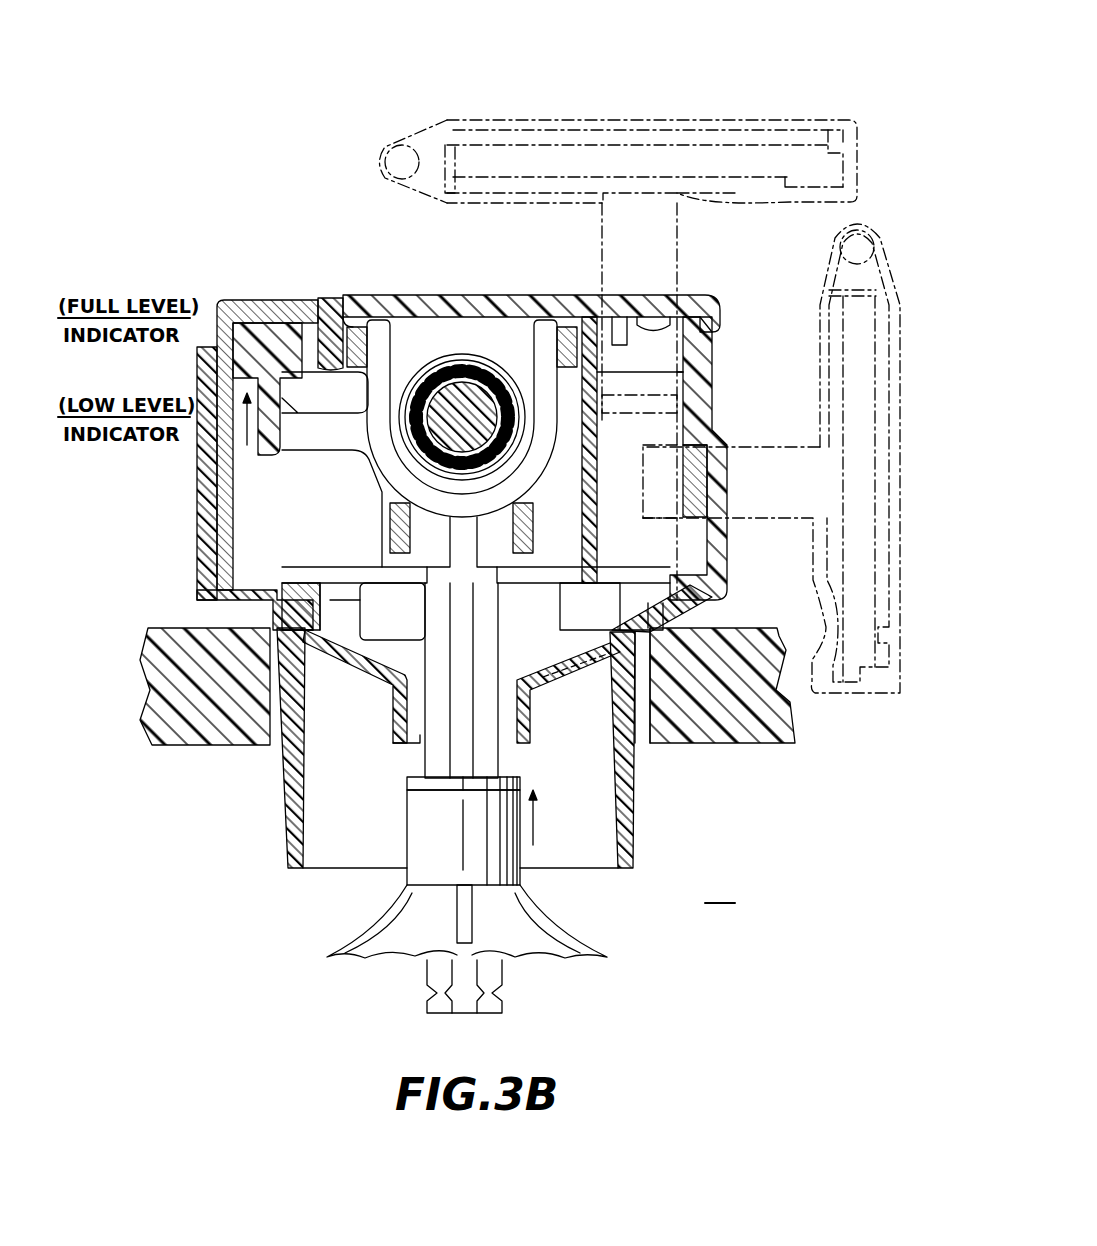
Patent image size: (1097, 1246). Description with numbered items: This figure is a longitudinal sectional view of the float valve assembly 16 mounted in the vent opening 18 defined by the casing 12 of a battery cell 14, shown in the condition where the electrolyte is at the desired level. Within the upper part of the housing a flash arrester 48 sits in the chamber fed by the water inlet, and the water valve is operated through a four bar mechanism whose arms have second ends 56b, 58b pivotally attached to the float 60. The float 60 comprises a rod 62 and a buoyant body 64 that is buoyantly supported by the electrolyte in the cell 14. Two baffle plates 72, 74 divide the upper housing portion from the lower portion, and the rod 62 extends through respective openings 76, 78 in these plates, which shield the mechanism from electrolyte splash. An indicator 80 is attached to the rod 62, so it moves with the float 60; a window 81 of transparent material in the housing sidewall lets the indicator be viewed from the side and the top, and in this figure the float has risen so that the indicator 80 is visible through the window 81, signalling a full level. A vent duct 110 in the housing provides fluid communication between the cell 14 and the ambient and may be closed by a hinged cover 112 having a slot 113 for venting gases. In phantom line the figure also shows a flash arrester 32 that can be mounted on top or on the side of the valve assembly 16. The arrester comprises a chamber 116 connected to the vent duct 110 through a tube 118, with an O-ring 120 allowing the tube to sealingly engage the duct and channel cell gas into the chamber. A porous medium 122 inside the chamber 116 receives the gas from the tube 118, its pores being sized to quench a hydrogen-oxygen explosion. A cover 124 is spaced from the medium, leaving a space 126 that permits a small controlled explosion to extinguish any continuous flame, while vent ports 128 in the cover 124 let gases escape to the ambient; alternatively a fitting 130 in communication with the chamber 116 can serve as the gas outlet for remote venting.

The casing 12 is at (178, 638).
The cell 14 is at (722, 888).
The float valve assembly 16 is at (407, 300).
The vent opening 18 is at (285, 735).
The flash arrester 32 is at (865, 165).
The flash arrester 48 is at (468, 385).
The second end 56b is at (535, 525).
The second end 58b is at (567, 327).
The float 60 is at (425, 832).
The rod 62 is at (480, 777).
The buoyant body 64 is at (385, 946).
The baffle plate 72 is at (398, 712).
The baffle plate 74 is at (345, 625).
The opening 76 is at (415, 742).
The opening 78 is at (415, 632).
The indicator 80 is at (265, 330).
The window 81 is at (280, 312).
The vent duct 110 is at (645, 480).
The hinged cover 112 is at (630, 295).
The slot 113 is at (690, 302).
The chamber 116 is at (808, 140).
The tube 118 is at (700, 330).
The O-ring 120 is at (655, 385).
The porous medium 122 is at (585, 160).
The cover 124 is at (508, 125).
The space 126 is at (723, 140).
The vent ports 128 is at (470, 118).
The fitting 130 is at (395, 160).